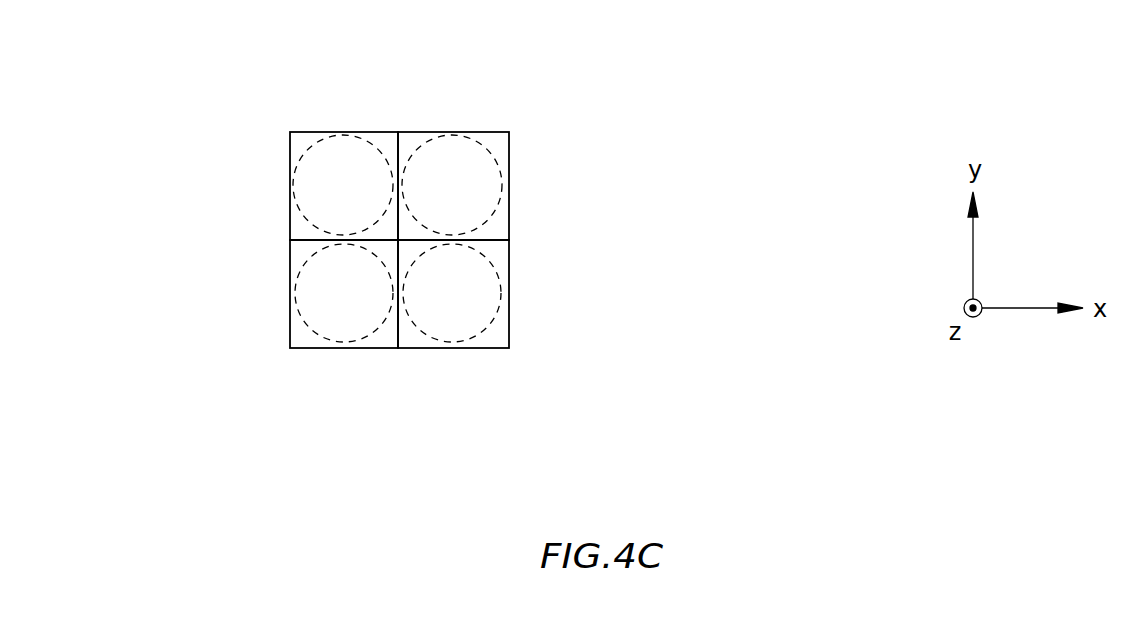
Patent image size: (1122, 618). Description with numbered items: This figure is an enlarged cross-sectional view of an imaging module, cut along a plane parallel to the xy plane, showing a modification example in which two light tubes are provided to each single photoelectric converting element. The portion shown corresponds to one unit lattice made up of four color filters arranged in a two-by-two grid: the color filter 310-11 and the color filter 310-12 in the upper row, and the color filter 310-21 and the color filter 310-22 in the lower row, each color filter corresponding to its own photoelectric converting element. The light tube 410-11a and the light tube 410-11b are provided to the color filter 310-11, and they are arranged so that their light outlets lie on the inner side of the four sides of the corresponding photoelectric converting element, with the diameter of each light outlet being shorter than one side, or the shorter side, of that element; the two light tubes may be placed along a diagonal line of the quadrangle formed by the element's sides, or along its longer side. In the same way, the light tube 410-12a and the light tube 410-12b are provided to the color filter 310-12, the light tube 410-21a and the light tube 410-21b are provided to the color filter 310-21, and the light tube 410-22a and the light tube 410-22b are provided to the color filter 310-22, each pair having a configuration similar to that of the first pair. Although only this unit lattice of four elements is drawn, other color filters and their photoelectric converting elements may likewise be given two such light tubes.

The color filter 310-11 is at (290, 214).
The color filter 310-12 is at (509, 144).
The color filter 310-21 is at (290, 338).
The color filter 310-22 is at (509, 262).
The light tube 410-11a is at (300, 183).
The light tube 410-11b is at (380, 184).
The light tube 410-12a is at (449, 137).
The light tube 410-12b is at (500, 223).
The light tube 410-21a is at (298, 286).
The light tube 410-21b is at (347, 337).
The light tube 410-22a is at (424, 294).
The light tube 410-22b is at (500, 330).